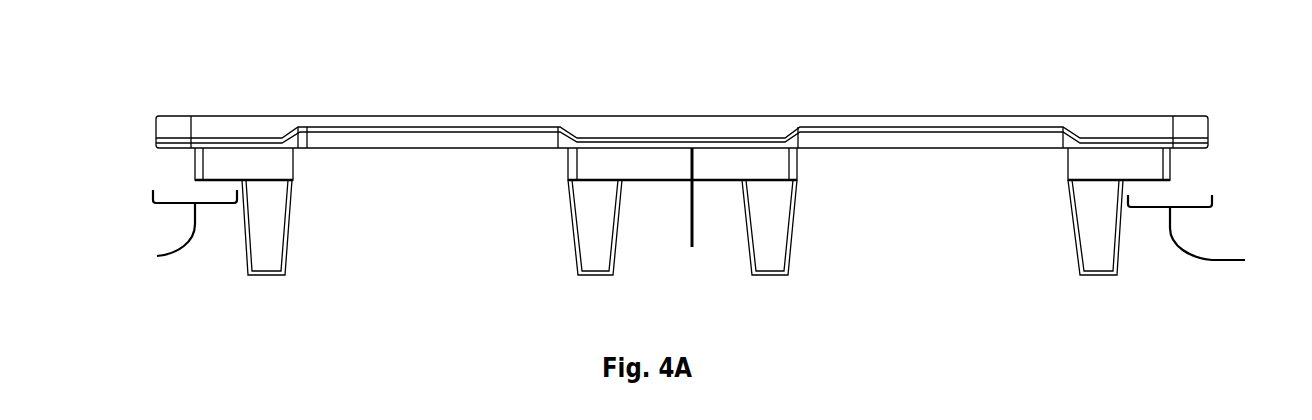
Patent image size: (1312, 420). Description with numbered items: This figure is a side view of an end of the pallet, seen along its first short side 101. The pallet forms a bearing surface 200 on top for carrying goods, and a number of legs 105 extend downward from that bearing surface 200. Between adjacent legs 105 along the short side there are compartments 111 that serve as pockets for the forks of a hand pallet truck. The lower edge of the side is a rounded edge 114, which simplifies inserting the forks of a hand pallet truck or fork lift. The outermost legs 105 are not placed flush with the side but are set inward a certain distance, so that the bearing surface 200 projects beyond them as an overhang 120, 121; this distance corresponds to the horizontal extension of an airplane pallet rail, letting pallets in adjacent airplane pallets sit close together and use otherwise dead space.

The bearing surface 200 is at (874, 113).
The first short side 101 is at (494, 154).
The leg 105 is at (263, 213).
The hand pallet truck pocket 111 is at (403, 227).
The rounded edge 114 is at (1210, 147).
The overhang 120 is at (701, 234).
The overhang 121 is at (686, 217).